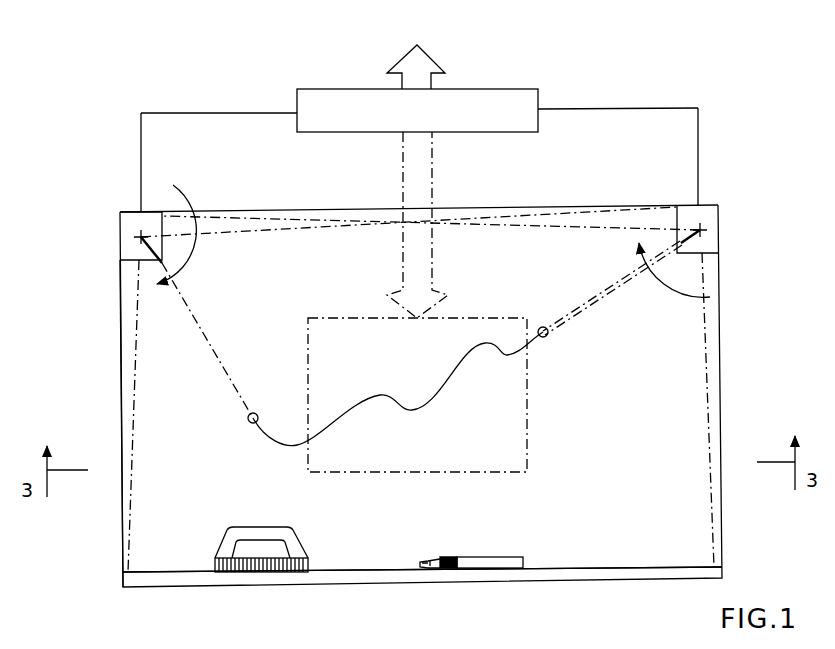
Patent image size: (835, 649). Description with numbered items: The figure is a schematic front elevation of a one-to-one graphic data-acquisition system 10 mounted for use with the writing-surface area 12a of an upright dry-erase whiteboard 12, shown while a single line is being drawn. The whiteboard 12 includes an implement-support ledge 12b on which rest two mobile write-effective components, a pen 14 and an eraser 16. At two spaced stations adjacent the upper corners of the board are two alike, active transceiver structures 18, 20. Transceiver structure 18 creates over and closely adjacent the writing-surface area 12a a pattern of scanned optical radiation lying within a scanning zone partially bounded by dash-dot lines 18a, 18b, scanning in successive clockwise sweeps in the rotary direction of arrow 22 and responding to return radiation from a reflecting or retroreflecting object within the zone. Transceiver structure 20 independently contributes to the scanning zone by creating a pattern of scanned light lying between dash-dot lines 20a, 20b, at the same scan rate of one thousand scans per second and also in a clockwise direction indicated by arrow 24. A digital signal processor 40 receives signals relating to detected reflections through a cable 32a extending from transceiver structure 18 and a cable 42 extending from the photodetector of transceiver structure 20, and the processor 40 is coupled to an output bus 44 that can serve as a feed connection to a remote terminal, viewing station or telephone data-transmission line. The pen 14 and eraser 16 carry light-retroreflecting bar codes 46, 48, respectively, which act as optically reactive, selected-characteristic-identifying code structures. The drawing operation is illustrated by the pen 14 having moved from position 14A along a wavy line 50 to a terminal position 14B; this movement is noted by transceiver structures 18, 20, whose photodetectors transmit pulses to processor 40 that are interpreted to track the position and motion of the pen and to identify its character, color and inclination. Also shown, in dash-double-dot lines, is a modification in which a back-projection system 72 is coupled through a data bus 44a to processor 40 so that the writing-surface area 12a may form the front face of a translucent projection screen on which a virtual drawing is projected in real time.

The graphic data-acquisition system 10 is at (757, 201).
The whiteboard 12 is at (118, 317).
The writing-surface area 12a is at (214, 451).
The implement-support ledge 12b is at (167, 571).
The pen 14 is at (500, 535).
The pen starting position 14A is at (260, 411).
The pen terminal position 14B is at (548, 344).
The eraser 16 is at (316, 525).
The transceiver structure 18 is at (128, 198).
The scanning zone boundary line 18a is at (303, 230).
The scanning zone boundary line 18b is at (137, 340).
The transceiver structure 20 is at (719, 185).
The scanning zone boundary line 20a is at (707, 382).
The scanning zone boundary line 20b is at (605, 228).
The arrow 22 is at (188, 248).
The arrow 24 is at (677, 293).
The cable 32a is at (179, 113).
The digital signal processor 40 is at (472, 83).
The cable 42 is at (616, 108).
The output bus 44 is at (436, 54).
The data bus 44a is at (402, 248).
The bar code 46 is at (450, 551).
The bar code 48 is at (320, 561).
The wavy line 50 is at (373, 392).
The back-projection system 72 is at (476, 315).